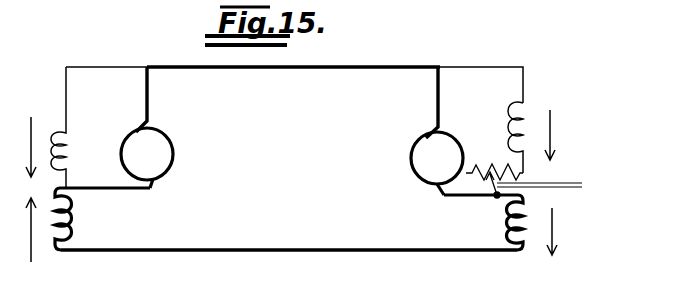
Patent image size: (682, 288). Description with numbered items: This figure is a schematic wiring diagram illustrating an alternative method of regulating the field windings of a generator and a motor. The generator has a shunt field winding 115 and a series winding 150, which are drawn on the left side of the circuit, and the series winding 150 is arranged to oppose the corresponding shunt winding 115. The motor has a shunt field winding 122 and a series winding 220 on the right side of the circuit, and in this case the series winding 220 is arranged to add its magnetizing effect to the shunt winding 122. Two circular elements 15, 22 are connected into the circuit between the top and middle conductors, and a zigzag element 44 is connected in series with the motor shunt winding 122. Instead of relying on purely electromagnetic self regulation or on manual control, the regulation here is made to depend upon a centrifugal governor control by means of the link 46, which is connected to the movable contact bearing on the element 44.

The shunt field winding 115 is at (68, 145).
The series winding 150 is at (70, 232).
The vacuum tube 15 is at (174, 153).
The vacuum tube 22 is at (411, 161).
The shunt field winding 122 is at (528, 103).
The resistance 44 is at (497, 158).
The link 46 is at (572, 183).
The series winding 220 is at (527, 200).